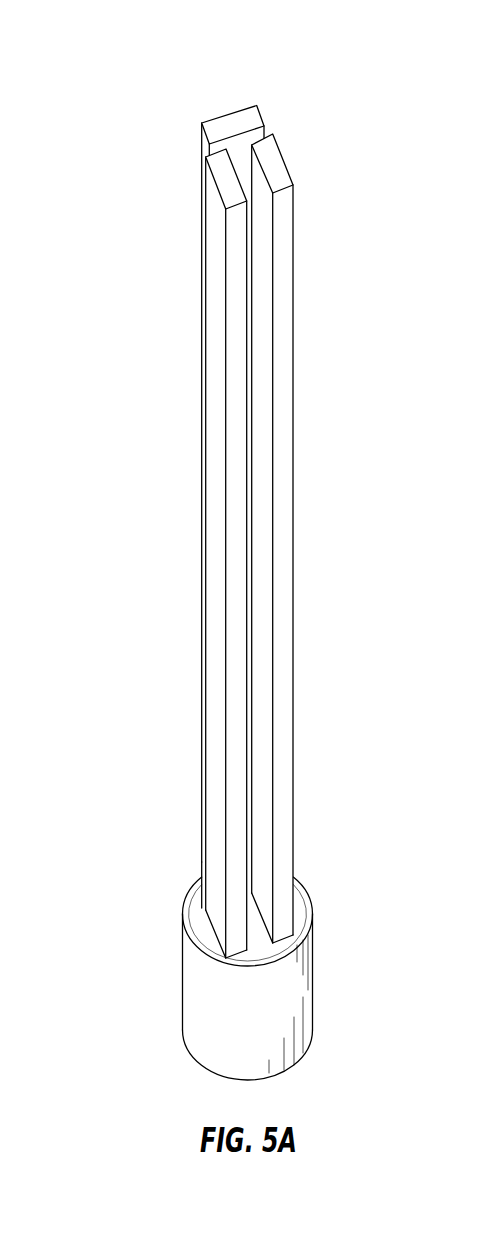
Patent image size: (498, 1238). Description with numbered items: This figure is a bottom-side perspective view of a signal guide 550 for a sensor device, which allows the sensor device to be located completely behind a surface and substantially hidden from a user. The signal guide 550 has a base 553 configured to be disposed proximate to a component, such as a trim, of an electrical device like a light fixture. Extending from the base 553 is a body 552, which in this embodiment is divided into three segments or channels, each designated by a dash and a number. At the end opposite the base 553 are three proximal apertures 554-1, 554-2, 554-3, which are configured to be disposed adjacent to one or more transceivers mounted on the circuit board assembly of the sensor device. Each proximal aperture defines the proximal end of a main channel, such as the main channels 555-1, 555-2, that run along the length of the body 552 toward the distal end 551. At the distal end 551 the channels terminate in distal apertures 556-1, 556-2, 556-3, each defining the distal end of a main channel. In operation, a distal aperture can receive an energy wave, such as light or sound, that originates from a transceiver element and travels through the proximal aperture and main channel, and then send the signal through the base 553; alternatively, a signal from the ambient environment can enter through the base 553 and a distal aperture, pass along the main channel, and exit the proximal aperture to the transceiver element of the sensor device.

The signal guide 550 is at (156, 50).
The distal end 551 is at (175, 1015).
The body 552 is at (150, 554).
The base 553 is at (150, 231).
The proximal aperture 554-1 is at (273, 165).
The proximal aperture 554-2 is at (228, 178).
The proximal aperture 554-3 is at (233, 125).
The main channel 555-1 is at (293, 422).
The main channel 555-2 is at (226, 393).
The distal aperture 556-1 is at (283, 943).
The distal aperture 556-2 is at (210, 929).
The distal aperture 556-3 is at (203, 878).